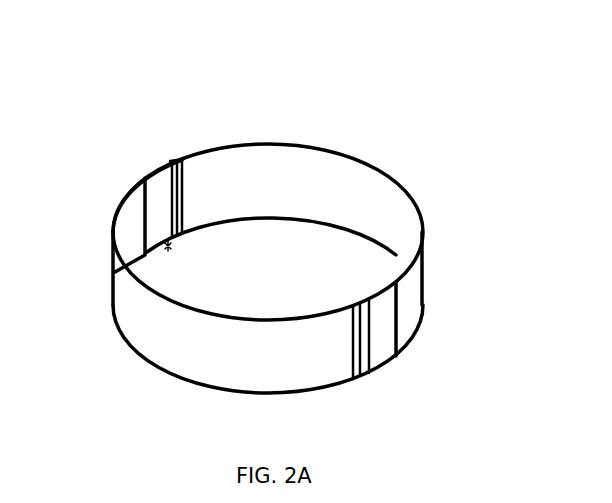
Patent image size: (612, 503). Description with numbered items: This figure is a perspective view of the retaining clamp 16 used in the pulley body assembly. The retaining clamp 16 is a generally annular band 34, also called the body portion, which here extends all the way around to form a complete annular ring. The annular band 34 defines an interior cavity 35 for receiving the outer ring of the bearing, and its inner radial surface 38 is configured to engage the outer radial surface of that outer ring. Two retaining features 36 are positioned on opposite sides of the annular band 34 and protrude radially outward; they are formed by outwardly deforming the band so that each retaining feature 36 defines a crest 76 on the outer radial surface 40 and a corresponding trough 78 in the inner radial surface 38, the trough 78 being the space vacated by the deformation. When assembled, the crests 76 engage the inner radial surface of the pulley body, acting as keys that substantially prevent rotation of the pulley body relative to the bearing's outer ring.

The retaining clamp 16 is at (299, 227).
The annular band 34 is at (180, 350).
The interior cavity 35 is at (322, 278).
The retaining feature 36 is at (150, 157).
The inner radial surface 38 is at (257, 180).
The outer radial surface 40 is at (248, 363).
The crest 76 is at (150, 167).
The trough 78 is at (170, 248).